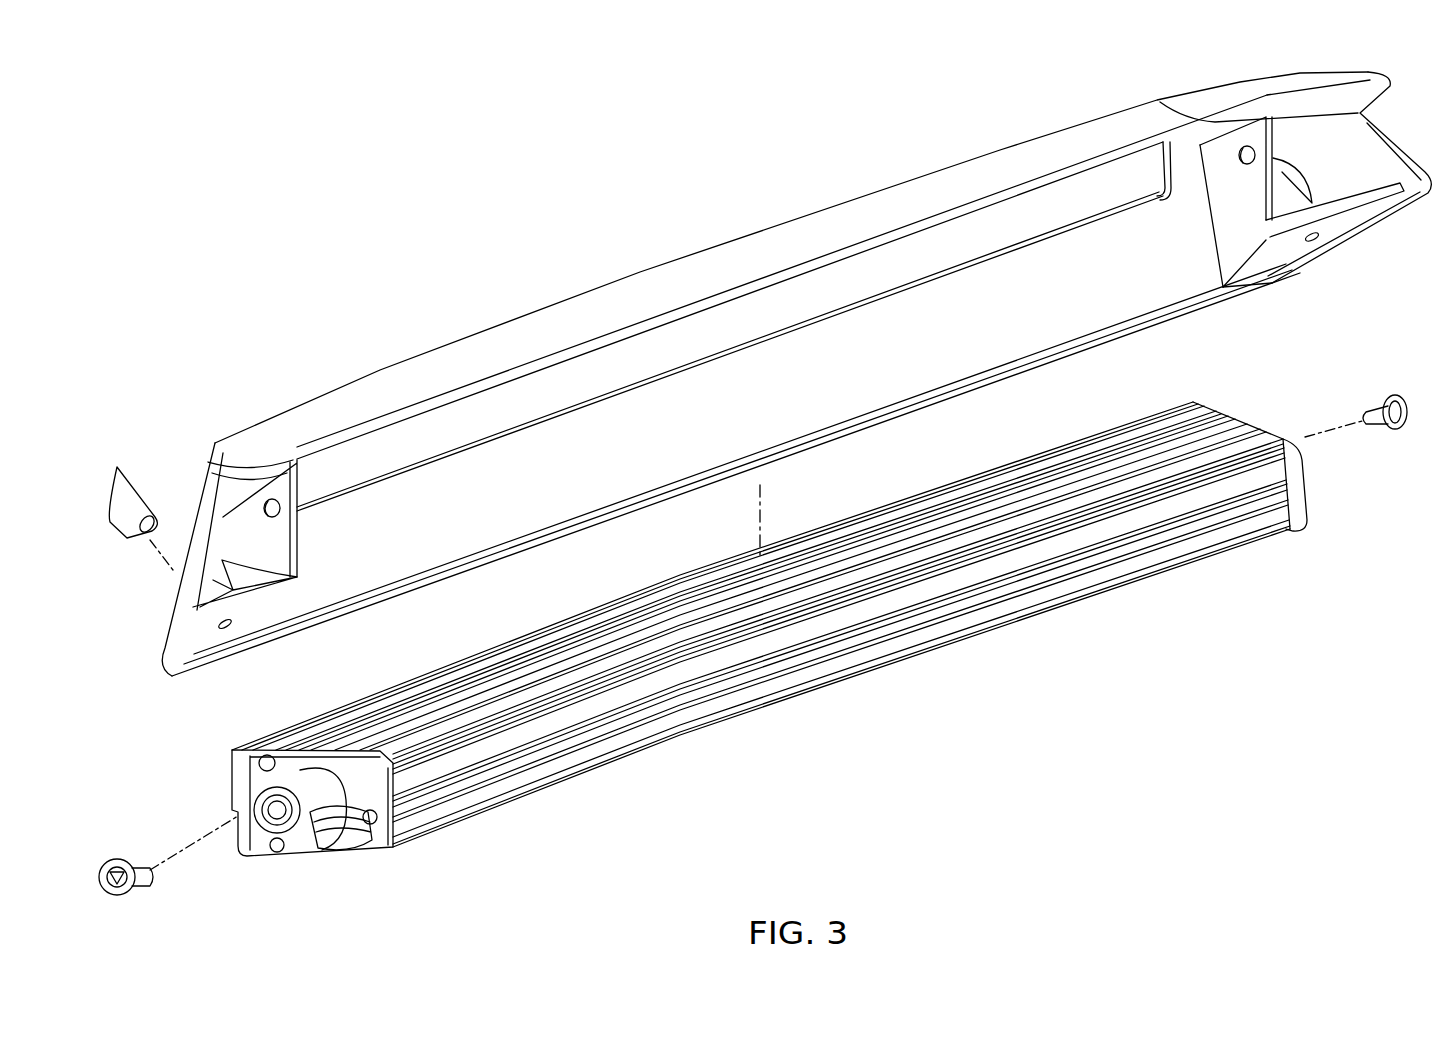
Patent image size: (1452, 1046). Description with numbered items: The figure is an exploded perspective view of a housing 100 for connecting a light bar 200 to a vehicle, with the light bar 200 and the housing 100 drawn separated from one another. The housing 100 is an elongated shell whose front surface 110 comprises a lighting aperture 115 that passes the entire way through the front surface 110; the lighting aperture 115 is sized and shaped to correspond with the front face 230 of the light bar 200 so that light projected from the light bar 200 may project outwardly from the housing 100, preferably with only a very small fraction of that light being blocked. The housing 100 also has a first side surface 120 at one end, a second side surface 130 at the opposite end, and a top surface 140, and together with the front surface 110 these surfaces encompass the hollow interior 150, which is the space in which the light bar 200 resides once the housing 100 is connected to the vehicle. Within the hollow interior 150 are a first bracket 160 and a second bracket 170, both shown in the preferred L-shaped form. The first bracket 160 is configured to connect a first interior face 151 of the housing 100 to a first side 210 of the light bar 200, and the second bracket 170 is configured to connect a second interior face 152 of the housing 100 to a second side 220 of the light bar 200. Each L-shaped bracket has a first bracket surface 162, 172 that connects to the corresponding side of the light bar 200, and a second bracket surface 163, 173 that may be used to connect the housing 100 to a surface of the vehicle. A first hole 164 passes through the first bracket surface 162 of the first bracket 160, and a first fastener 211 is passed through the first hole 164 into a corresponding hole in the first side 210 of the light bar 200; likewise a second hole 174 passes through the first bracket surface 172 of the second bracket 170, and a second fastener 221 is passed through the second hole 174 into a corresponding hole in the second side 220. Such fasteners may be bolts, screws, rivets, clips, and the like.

The housing 100 is at (925, 165).
The front surface 110 is at (789, 405).
The lighting aperture 115 is at (832, 290).
The first side surface 120 is at (1390, 140).
The second side surface 130 is at (217, 494).
The top surface 140 is at (625, 293).
The hollow interior 150 is at (478, 540).
The first interior face 151 is at (1347, 170).
The second interior face 152 is at (273, 560).
The first bracket 160 is at (1212, 256).
The first bracket surface 162 is at (1233, 208).
The second bracket surface 163 is at (1287, 257).
The first hole 164 is at (1245, 150).
The second bracket 170 is at (312, 489).
The first bracket surface 172 is at (283, 540).
The second bracket surface 173 is at (228, 633).
The second hole 174 is at (270, 500).
The light bar 200 is at (908, 686).
The first side 210 is at (1300, 512).
The first fastener 211 is at (1393, 395).
The second side 220 is at (297, 845).
The second fastener 221 is at (116, 860).
The front face 230 is at (232, 783).